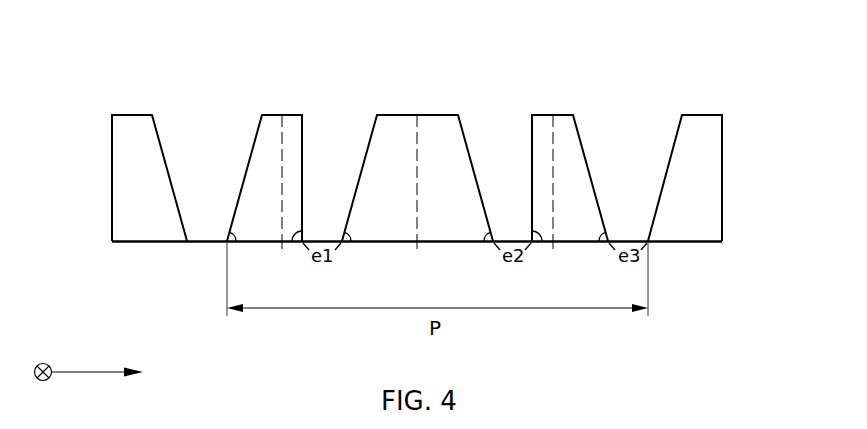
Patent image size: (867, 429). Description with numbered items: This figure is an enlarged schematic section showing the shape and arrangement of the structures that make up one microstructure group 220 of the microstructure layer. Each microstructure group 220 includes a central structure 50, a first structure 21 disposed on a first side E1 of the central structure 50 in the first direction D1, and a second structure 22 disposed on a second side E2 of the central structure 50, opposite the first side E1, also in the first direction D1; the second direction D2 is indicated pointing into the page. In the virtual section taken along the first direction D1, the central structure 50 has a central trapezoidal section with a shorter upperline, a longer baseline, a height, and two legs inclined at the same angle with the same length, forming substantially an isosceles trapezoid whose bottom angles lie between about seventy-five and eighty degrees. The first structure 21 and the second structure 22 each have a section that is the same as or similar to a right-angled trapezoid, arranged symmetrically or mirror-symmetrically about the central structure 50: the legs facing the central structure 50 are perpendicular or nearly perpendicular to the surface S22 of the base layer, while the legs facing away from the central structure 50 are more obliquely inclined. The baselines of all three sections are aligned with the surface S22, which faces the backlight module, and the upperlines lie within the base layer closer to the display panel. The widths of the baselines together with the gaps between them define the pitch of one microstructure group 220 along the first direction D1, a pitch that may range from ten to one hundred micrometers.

The microstructure group 220 is at (577, 34).
The first structure 21 is at (273, 151).
The central structure 50 is at (415, 151).
The second structure 22 is at (559, 151).
The surface of the base layer S22 is at (696, 245).
The first side E1 is at (149, 165).
The second side E2 is at (685, 164).
The first direction D1 is at (97, 388).
The second direction D2 is at (41, 359).